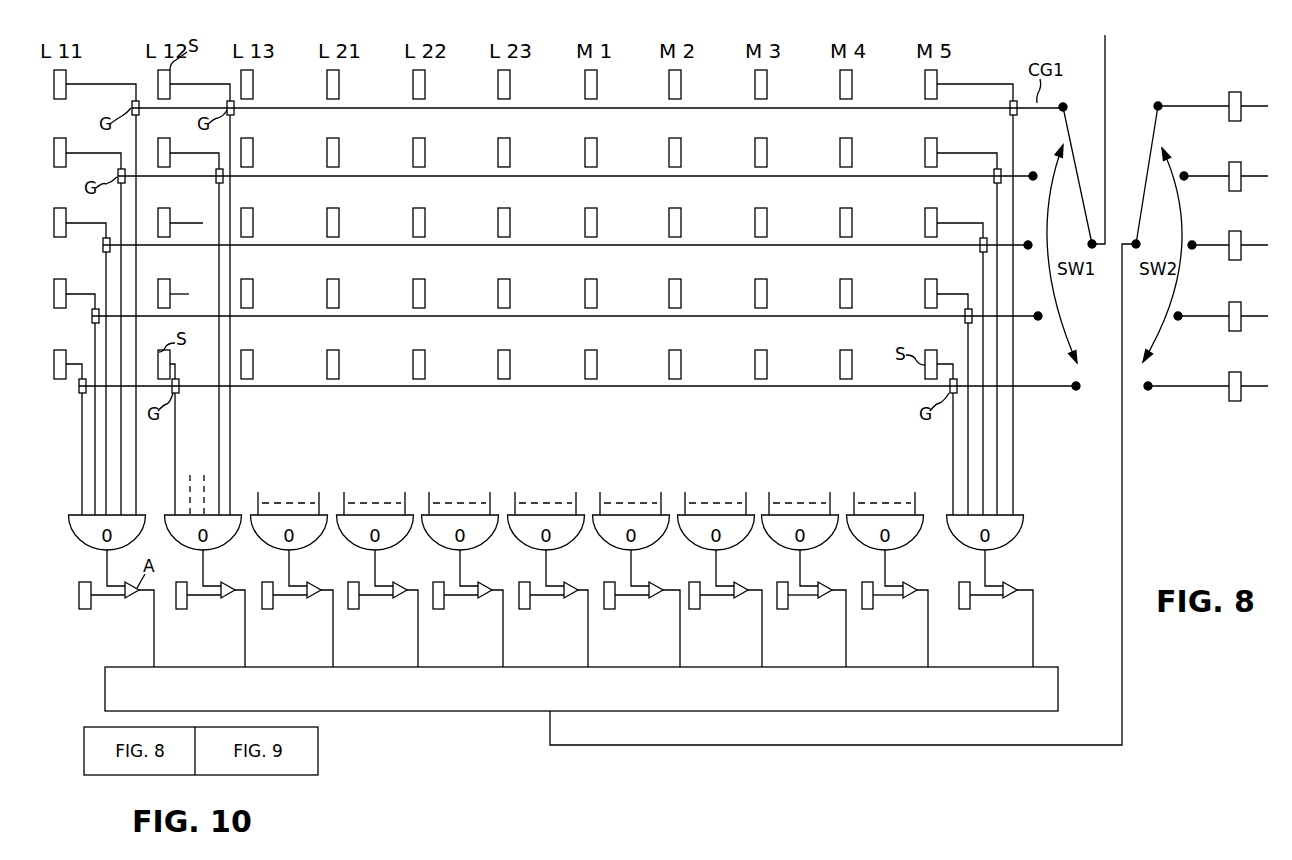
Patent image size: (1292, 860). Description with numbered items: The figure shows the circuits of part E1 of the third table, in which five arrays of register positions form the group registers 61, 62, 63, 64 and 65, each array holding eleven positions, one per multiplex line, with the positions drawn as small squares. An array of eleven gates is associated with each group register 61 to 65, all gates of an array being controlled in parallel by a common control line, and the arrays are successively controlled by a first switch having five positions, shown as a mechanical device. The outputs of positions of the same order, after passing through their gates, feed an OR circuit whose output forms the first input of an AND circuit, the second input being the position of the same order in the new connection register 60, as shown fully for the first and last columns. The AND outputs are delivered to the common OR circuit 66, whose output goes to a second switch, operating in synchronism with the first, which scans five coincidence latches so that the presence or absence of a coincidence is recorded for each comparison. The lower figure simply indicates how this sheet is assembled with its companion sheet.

The new connection register 60 is at (91, 595).
The group register 61 is at (546, 92).
The group register 62 is at (531, 160).
The group register 63 is at (529, 230).
The group register 64 is at (534, 301).
The group register 65 is at (553, 371).
The OR circuit 66 is at (581, 689).